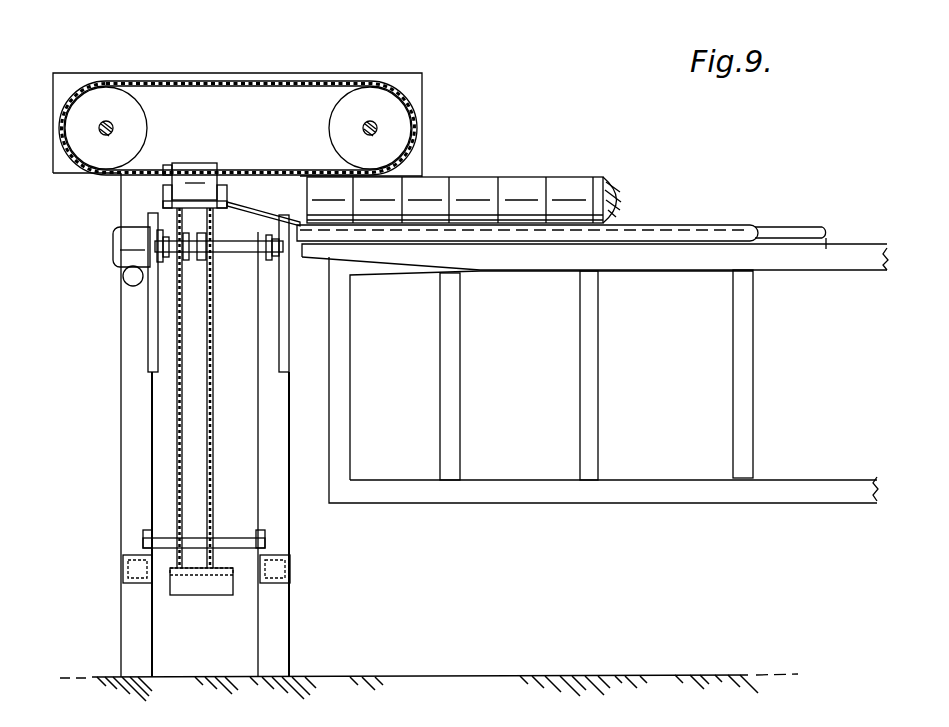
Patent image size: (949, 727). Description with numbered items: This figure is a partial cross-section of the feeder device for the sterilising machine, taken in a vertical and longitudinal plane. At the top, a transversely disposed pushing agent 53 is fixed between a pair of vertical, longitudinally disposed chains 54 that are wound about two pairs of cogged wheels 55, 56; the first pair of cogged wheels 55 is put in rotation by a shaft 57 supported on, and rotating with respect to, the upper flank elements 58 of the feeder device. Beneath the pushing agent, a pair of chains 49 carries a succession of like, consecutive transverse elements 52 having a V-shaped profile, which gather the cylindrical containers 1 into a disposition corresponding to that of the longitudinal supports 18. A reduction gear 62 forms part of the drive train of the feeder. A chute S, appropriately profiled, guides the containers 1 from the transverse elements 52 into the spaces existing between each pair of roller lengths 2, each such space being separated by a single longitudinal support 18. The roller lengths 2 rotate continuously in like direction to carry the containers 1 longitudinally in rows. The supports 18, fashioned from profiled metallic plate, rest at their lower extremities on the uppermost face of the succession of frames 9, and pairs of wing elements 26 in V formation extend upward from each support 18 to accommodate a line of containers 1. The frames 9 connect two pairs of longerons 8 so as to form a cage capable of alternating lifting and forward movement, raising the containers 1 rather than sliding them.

The cylindrical containers 1 is at (200, 178).
The roller lengths 2 is at (712, 232).
The longerons 8 is at (525, 490).
The frames 9 is at (594, 385).
The longitudinal supports 18 is at (857, 233).
The wing elements 26 is at (800, 232).
The chains 49 is at (178, 462).
The transverse elements 52 is at (163, 196).
The pushing agent 53 is at (168, 162).
The chains 54 is at (250, 82).
The cogged wheels 55 is at (382, 100).
The cogged wheels 56 is at (115, 105).
The shaft 57 is at (378, 125).
The upper flank elements 58 is at (318, 103).
The reduction gear 62 is at (118, 253).
The chute S is at (272, 208).